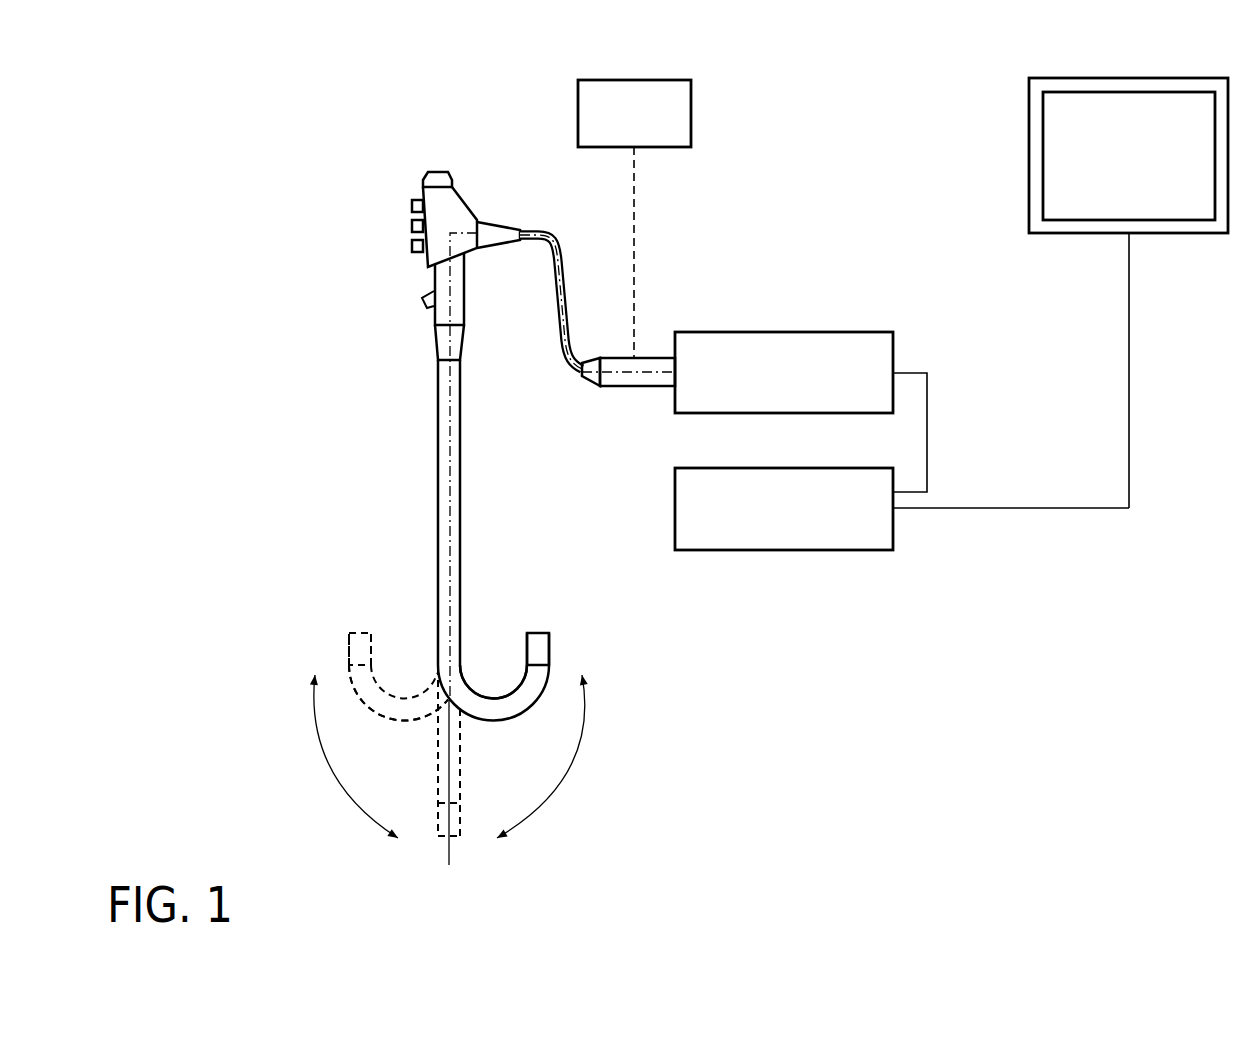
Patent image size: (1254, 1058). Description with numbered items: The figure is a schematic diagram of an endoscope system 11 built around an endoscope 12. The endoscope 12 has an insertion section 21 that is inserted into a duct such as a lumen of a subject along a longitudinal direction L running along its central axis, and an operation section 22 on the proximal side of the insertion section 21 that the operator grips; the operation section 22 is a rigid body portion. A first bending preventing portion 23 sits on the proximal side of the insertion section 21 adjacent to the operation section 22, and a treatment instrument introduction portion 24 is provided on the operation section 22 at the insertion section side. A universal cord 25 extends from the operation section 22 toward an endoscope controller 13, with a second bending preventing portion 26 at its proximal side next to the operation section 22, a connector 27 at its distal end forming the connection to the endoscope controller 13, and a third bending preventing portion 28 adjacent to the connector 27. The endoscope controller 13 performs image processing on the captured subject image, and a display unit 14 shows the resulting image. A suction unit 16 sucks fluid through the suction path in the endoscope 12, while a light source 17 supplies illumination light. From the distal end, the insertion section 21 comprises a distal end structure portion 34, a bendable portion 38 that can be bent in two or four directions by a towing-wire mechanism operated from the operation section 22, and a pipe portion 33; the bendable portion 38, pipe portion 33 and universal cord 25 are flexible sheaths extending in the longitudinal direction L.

The endoscope system 11 is at (490, 97).
The endoscope 12 is at (355, 330).
The endoscope controller 13 is at (895, 535).
The display unit 14 is at (1029, 107).
The suction unit 16 is at (661, 80).
The light source 17 is at (895, 352).
The insertion section 21 is at (478, 616).
The operation section 22 is at (383, 172).
The first bending preventing portion 23 is at (437, 345).
The treatment instrument introduction portion 24 is at (425, 300).
The universal cord 25 is at (552, 252).
The second bending preventing portion 26 is at (497, 230).
The connector 27 is at (648, 357).
The third bending preventing portion 28 is at (585, 387).
The pipe portion 33 is at (462, 458).
The distal end structure portion 34 is at (347, 650).
The bendable portion 38 is at (438, 739).
The longitudinal direction L is at (573, 282).